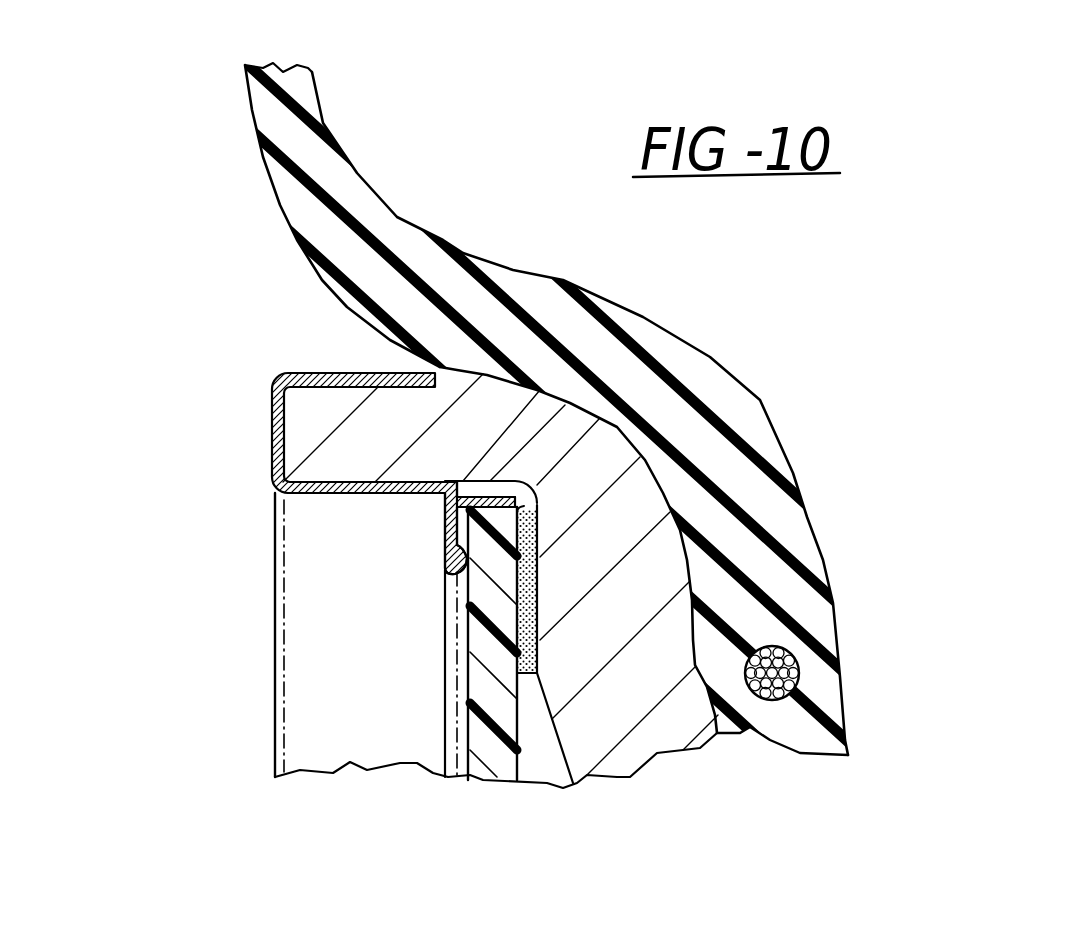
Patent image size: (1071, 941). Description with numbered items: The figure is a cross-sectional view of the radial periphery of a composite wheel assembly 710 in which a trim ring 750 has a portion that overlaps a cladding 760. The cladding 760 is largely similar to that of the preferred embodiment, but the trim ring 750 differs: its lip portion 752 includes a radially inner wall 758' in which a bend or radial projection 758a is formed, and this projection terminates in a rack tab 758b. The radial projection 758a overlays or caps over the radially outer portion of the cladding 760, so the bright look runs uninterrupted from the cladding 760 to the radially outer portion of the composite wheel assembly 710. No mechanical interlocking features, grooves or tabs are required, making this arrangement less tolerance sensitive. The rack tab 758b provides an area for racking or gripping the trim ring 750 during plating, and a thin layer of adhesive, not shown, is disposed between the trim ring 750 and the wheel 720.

The composite wheel assembly 710 is at (160, 188).
The wheel 720 is at (662, 757).
The trim ring 750 is at (320, 707).
The lip portion 752 is at (273, 447).
The radially inner wall 758' is at (293, 531).
The radial projection 758a is at (448, 590).
The rack tab 758b is at (488, 493).
The cladding 760 is at (503, 750).